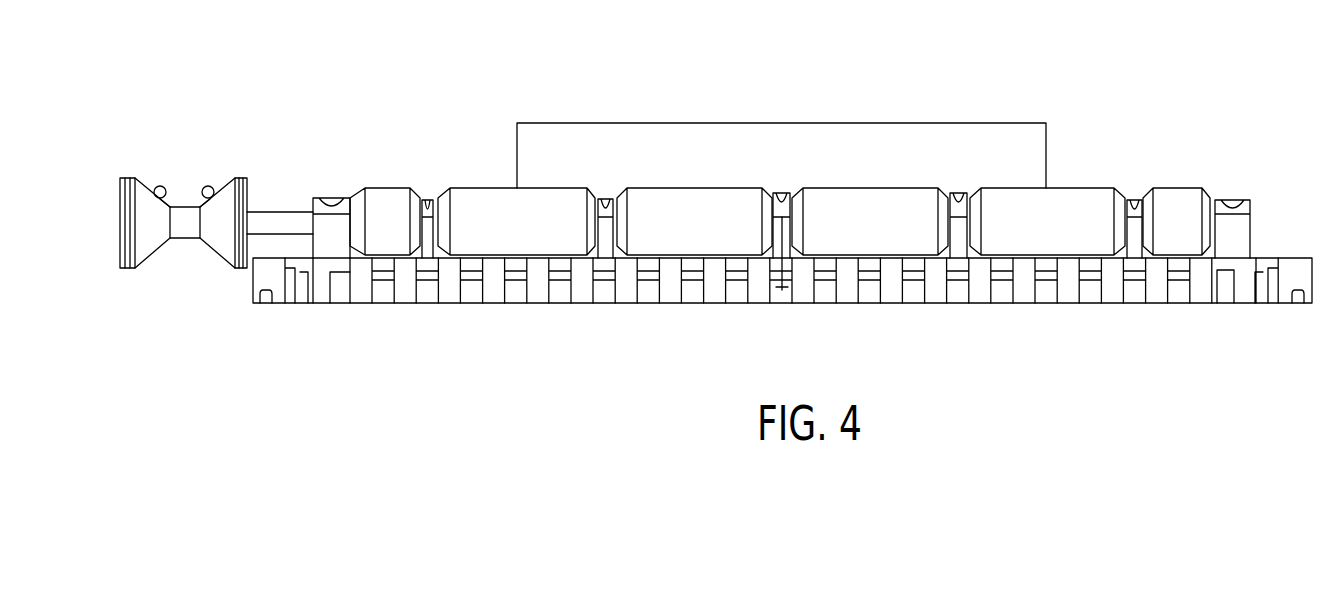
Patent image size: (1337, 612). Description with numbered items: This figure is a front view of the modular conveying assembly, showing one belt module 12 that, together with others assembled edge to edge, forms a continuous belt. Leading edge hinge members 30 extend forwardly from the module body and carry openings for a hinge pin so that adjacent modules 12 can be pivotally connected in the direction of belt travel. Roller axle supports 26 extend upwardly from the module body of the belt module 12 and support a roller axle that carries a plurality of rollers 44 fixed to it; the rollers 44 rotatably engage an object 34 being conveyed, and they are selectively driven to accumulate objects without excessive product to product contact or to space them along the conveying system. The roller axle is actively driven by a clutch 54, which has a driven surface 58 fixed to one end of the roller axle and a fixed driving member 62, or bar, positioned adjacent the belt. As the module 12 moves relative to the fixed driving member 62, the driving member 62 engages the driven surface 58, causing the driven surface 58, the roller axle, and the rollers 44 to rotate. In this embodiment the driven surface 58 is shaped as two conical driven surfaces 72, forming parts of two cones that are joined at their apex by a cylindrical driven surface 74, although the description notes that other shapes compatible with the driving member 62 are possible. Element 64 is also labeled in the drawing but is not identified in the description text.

The belt module 12 is at (253, 291).
The roller axle support 26 is at (337, 205).
The leading edge hinge member 30 is at (1110, 293).
The object 34 is at (1003, 122).
The roller 44 is at (374, 232).
The clutch 54 is at (200, 93).
The driven surface 58 is at (152, 187).
The driving member 62 is at (203, 196).
The shaft 64 is at (285, 212).
The conical driven surface 72 is at (150, 256).
The cylindrical driven surface 74 is at (185, 239).